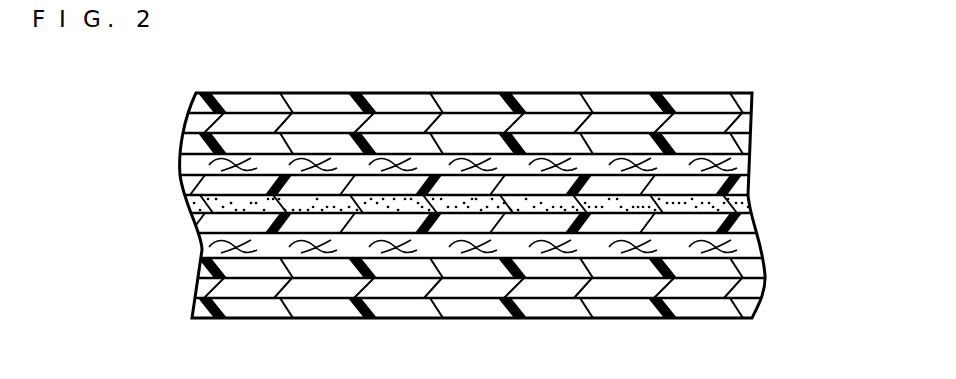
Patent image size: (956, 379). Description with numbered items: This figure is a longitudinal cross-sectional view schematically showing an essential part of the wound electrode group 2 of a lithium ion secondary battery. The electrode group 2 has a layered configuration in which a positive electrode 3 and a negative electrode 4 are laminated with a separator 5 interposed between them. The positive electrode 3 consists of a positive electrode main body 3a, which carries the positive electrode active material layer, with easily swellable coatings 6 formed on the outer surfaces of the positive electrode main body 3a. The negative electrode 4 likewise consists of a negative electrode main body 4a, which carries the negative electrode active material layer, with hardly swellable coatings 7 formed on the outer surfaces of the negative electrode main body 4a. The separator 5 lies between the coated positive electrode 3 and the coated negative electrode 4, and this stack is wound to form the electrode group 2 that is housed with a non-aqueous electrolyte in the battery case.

The electrode group 2 is at (205, 77).
The positive electrode 3 is at (484, 207).
The positive electrode main body 3a is at (710, 205).
The negative electrode 4 is at (525, 202).
The negative electrode main body 4a is at (705, 123).
The separator 5 is at (213, 161).
The easily swellable coating 6 is at (707, 185).
The hardly swellable coating 7 is at (703, 103).